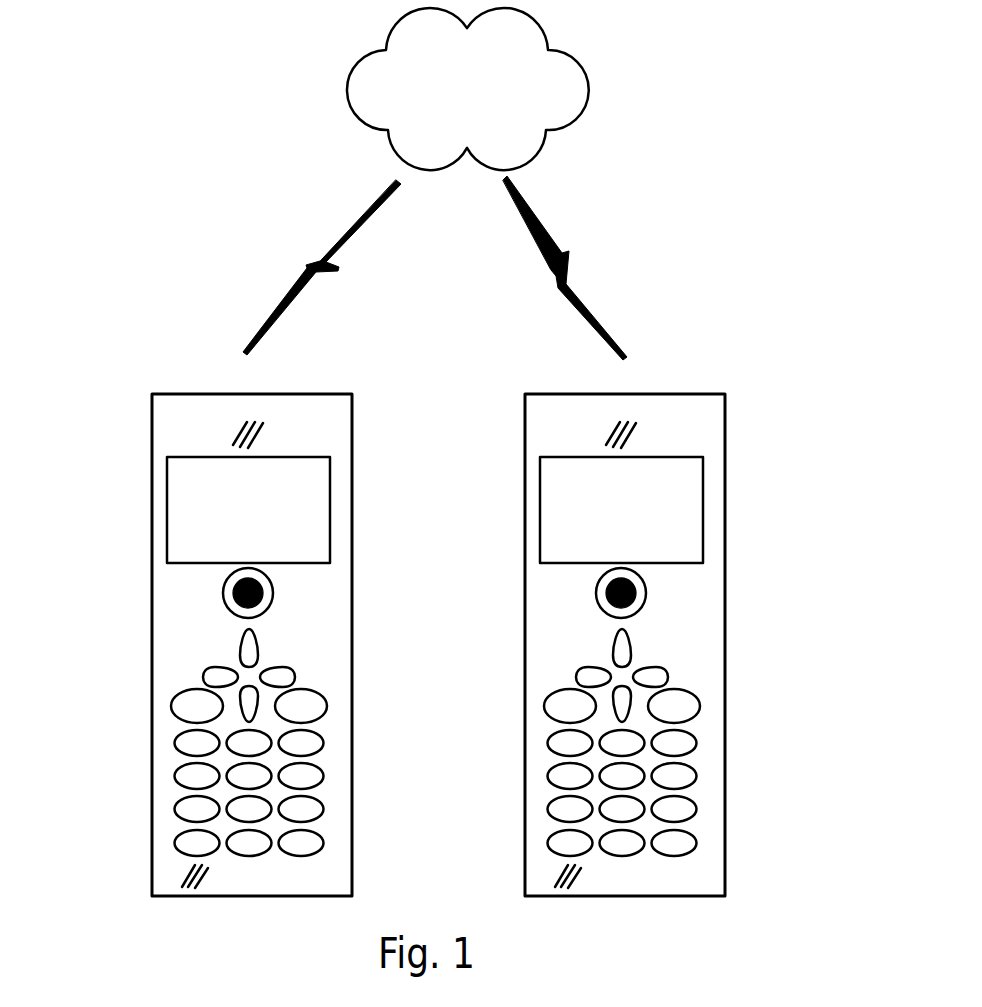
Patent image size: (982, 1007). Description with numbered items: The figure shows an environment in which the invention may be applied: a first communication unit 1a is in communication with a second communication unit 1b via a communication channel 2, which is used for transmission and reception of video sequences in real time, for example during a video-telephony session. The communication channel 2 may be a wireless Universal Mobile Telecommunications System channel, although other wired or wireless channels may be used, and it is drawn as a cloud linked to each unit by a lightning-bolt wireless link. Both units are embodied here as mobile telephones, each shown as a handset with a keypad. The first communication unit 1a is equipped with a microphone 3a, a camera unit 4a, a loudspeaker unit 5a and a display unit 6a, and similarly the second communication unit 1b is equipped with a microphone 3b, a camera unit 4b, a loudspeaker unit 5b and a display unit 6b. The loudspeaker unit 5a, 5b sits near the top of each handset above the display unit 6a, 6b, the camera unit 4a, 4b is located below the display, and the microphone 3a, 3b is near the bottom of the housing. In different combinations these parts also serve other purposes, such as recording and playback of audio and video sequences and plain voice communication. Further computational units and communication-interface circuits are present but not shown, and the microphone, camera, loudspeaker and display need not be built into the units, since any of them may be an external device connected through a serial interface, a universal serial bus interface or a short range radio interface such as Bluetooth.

The first communication unit 1a is at (152, 448).
The second communication unit 1b is at (525, 448).
The communication channel 2 is at (350, 97).
The microphone 3a is at (205, 875).
The microphone 3b is at (578, 875).
The camera unit 4a is at (262, 592).
The camera unit 4b is at (635, 592).
The loudspeaker unit 5a is at (262, 437).
The loudspeaker unit 5b is at (635, 437).
The display unit 6a is at (331, 508).
The display unit 6b is at (704, 508).